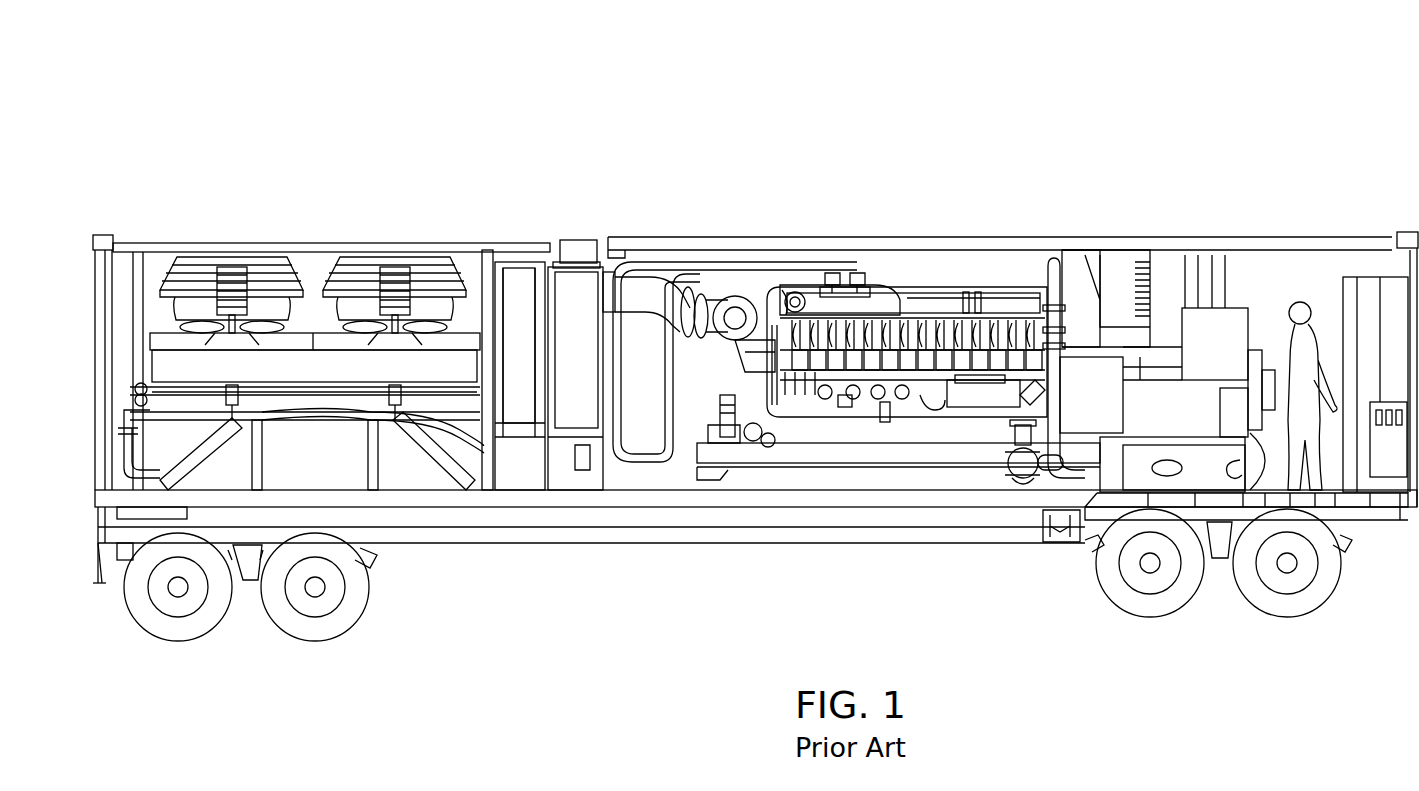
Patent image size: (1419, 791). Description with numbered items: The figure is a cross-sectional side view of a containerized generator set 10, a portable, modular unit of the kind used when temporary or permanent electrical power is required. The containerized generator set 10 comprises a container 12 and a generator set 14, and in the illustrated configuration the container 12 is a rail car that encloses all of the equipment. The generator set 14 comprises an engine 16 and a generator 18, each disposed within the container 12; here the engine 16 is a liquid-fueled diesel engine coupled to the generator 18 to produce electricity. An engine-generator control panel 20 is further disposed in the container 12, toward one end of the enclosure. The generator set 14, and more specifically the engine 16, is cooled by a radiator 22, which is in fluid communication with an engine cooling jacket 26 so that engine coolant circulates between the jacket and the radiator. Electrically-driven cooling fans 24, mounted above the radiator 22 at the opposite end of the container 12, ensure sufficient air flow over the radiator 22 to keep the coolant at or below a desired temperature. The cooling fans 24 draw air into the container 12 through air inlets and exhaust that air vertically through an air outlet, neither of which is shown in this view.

The containerized generator set 10 is at (353, 92).
The container 12 is at (128, 242).
The generator set 14 is at (925, 178).
The engine 16 is at (922, 282).
The generator 18 is at (1157, 363).
The engine-generator control panel 20 is at (1363, 297).
The radiator 22 is at (228, 457).
The cooling fans 24 is at (247, 276).
The engine cooling jacket 26 is at (866, 300).